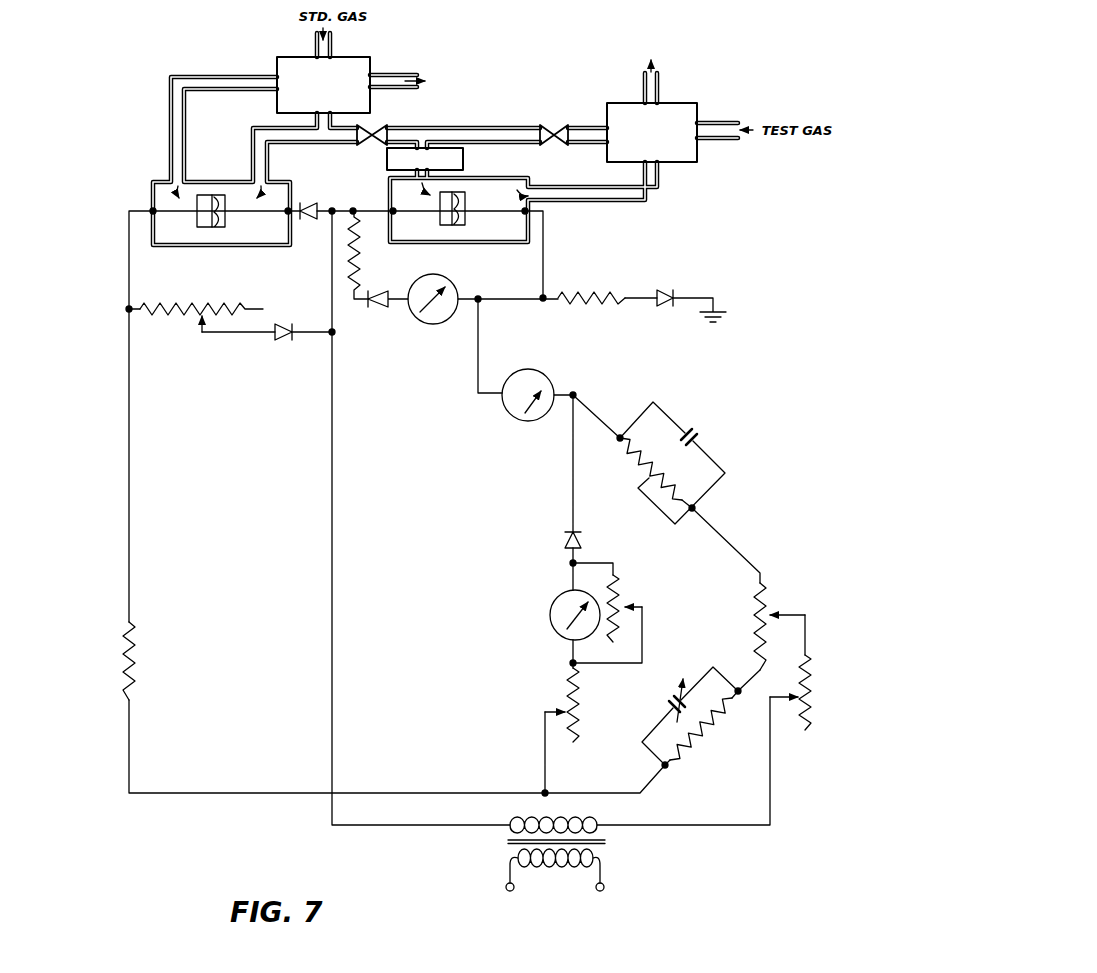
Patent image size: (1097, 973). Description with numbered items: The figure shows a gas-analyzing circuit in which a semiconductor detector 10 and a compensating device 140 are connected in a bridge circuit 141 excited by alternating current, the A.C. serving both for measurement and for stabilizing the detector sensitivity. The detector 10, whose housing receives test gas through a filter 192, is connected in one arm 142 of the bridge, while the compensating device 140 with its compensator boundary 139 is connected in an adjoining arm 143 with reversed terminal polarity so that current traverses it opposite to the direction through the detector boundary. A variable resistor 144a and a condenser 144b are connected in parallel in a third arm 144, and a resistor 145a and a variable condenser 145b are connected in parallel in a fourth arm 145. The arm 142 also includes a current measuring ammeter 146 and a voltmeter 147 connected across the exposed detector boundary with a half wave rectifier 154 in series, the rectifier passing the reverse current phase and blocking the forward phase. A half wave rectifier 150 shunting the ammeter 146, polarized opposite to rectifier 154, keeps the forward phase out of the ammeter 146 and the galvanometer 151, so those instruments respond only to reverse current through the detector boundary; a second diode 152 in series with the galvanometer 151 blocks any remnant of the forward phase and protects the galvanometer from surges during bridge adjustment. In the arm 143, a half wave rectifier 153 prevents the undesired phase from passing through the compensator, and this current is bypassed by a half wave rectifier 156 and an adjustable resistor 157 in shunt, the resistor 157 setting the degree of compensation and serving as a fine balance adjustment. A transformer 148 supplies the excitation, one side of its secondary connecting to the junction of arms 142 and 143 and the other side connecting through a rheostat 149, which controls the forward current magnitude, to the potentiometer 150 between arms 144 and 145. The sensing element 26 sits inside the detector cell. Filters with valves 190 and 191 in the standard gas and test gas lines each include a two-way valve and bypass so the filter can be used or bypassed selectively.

The detector 10 is at (533, 178).
The test sensing element 26 is at (467, 197).
The compensator boundary 139 is at (191, 216).
The compensating device 140 is at (231, 160).
The bridge circuit 141 is at (458, 503).
The arm of the bridge 142 is at (560, 277).
The adjoining arm 143 is at (137, 202).
The third arm 144 is at (723, 453).
The variable resistor 144a is at (640, 452).
The condenser 144b is at (700, 433).
The fourth arm 145 is at (693, 758).
The resistor 145a is at (701, 738).
The variable condenser 145b is at (670, 705).
The ammeter 146 is at (509, 409).
The voltmeter 147 is at (470, 281).
The transformer 148 is at (503, 839).
The rheostat 149 is at (812, 675).
The half wave rectifier 150 is at (662, 290).
The galvanometer 151 is at (557, 598).
The rectifier 152 is at (585, 537).
The half wave rectifier 153 is at (303, 202).
The half wave rectifier 154 is at (380, 311).
The half wave rectifier 156 is at (281, 320).
The adjustable resistor 157 is at (190, 293).
The filter and valve 190 is at (372, 64).
The filter and valve 191 is at (697, 113).
The filter 192 is at (463, 158).